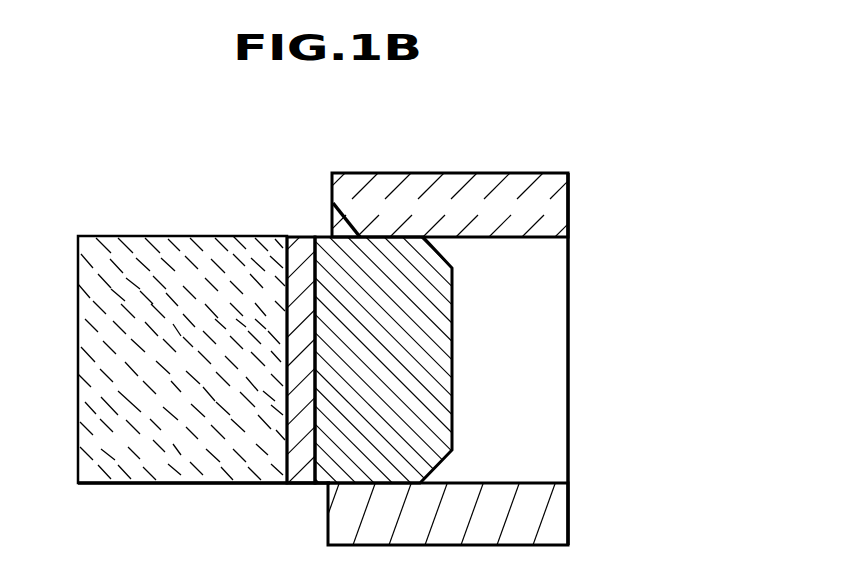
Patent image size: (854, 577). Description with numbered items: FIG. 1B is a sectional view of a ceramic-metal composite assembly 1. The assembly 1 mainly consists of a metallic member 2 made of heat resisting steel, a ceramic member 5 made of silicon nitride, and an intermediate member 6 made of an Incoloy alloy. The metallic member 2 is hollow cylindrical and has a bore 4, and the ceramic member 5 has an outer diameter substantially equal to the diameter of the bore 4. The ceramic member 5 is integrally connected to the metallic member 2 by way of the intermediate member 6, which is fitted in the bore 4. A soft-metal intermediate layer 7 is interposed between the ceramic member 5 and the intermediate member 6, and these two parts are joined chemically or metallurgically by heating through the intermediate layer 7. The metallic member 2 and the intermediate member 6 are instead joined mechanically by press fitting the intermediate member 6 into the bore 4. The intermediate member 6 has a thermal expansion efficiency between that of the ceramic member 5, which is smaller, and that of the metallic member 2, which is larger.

The assembly 1 is at (594, 162).
The metallic member 2 is at (520, 187).
The bore 4 is at (528, 483).
The ceramic member 5 is at (135, 485).
The intermediate member 6 is at (442, 375).
The intermediate layer 7 is at (293, 484).